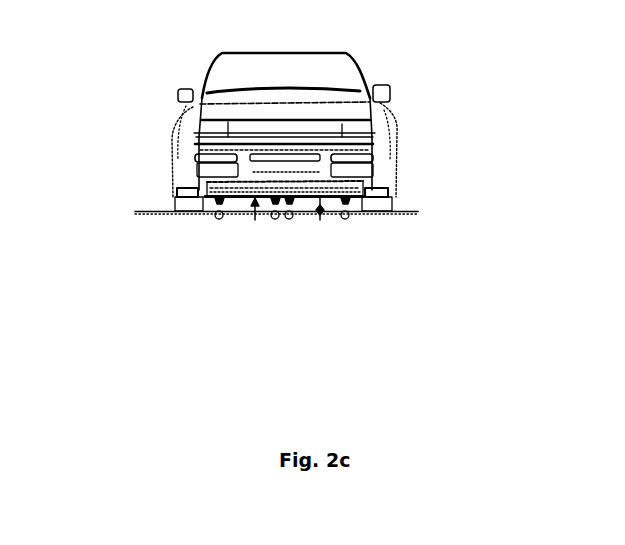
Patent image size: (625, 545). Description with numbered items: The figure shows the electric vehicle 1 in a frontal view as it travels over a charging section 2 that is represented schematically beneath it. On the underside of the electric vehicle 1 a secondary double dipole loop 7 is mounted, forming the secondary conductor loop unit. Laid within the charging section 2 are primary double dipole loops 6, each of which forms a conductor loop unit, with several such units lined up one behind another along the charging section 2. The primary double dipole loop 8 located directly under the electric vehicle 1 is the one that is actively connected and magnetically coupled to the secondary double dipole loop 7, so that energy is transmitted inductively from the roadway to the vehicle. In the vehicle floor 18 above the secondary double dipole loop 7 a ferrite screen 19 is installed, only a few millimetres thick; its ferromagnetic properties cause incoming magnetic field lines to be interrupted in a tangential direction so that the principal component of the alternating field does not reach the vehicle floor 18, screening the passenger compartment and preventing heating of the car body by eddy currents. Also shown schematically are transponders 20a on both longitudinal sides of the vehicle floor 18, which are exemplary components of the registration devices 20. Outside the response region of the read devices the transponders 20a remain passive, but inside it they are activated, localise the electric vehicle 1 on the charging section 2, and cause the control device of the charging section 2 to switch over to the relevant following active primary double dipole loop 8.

The electric vehicle 1 is at (301, 146).
The charging section 2 is at (203, 213).
The primary double dipole loops 6 is at (358, 235).
The primary double dipole loop 8 is at (350, 220).
The secondary double dipole loop 7 is at (195, 215).
The vehicle floor 18 is at (385, 152).
The ferrite screen 19 is at (380, 215).
The registration devices 20 is at (303, 196).
The transponders 20a is at (175, 190).